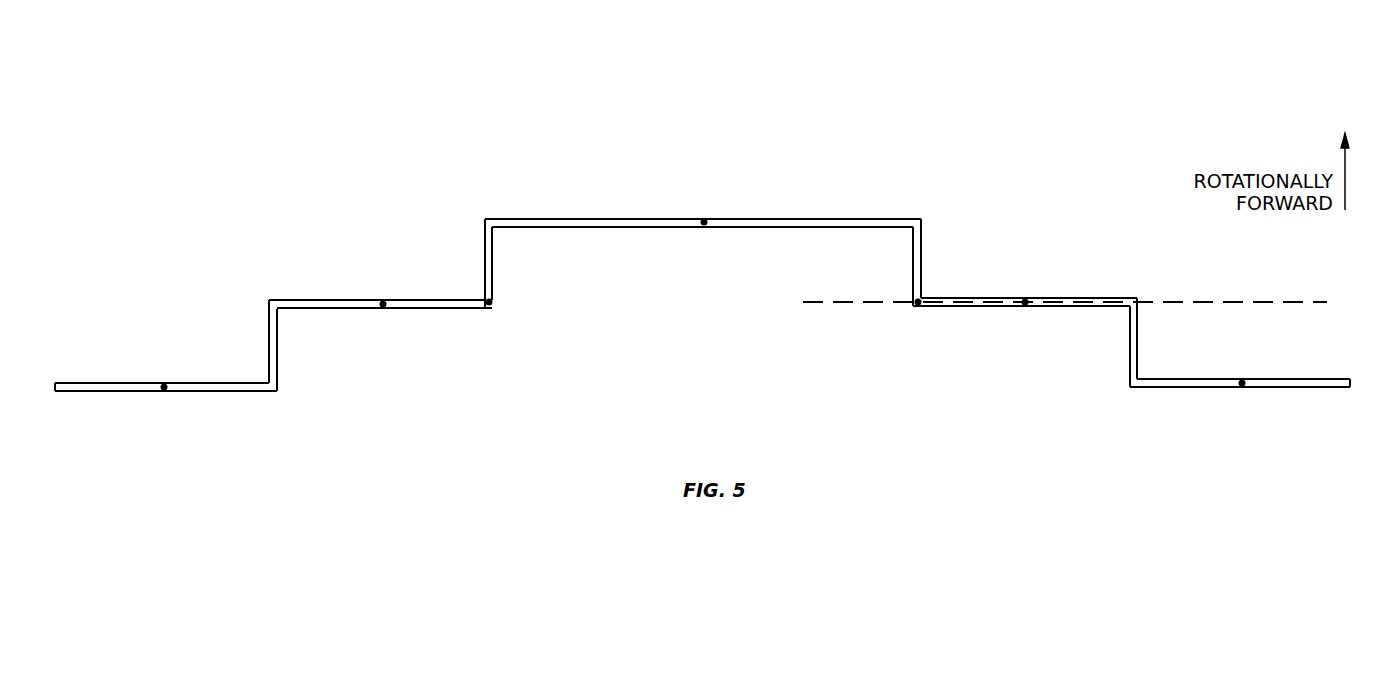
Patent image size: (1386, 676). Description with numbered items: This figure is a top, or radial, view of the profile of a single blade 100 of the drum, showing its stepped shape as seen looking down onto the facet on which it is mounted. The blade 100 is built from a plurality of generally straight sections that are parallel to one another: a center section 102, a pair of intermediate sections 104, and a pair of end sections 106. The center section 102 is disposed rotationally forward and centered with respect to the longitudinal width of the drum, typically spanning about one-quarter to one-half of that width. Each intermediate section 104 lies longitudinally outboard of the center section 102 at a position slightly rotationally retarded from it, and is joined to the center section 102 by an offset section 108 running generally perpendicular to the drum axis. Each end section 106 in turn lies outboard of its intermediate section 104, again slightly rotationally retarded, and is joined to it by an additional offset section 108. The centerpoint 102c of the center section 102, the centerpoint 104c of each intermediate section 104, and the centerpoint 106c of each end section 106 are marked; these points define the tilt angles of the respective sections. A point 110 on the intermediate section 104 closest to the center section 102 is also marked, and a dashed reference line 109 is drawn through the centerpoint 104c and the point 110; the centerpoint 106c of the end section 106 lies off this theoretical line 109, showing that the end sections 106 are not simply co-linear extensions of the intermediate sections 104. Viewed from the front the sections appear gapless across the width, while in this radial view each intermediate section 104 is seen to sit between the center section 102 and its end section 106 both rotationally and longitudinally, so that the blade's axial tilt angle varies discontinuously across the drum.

The blade 100 is at (978, 92).
The center section 102 is at (731, 228).
The centerpoint of center section 102c is at (705, 219).
The intermediate section 104 is at (405, 309).
The centerpoint of intermediate section 104c is at (383, 301).
The end section 106 is at (213, 391).
The centerpoint of end section 106c is at (164, 384).
The offset section 108 is at (278, 365).
The reference line 109 is at (1226, 300).
The point on intermediate section closest to center section 110 is at (490, 305).